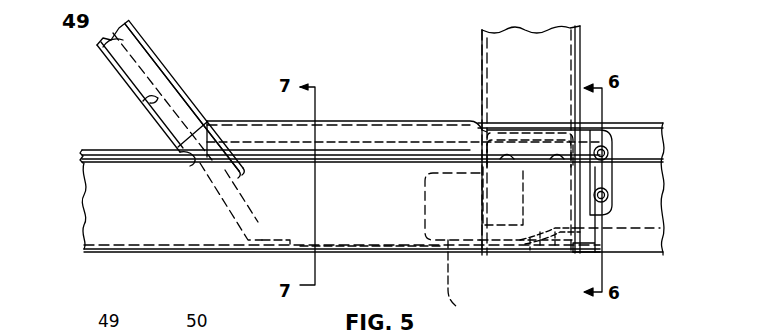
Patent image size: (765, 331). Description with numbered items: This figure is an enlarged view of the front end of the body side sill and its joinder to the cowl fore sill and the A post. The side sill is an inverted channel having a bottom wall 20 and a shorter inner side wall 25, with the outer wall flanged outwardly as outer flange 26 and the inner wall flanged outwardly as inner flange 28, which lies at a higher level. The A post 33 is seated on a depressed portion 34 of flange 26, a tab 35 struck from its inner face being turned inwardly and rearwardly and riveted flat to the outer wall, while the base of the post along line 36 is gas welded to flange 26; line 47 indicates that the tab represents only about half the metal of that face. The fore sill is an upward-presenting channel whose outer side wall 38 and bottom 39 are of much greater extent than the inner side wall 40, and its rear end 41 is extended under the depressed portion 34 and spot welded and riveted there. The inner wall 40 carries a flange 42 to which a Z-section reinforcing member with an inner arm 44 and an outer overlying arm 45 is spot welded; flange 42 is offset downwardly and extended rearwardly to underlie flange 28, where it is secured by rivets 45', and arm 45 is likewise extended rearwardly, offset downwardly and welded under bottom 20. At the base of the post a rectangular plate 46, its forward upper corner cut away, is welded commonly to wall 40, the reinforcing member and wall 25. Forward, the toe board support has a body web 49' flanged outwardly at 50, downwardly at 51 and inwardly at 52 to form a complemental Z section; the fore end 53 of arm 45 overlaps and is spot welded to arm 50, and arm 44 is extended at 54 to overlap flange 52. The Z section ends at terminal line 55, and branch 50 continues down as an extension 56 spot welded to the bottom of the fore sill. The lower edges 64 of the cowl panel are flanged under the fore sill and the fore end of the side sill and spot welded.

The bottom wall 20 is at (652, 120).
The inner side wall 25 is at (663, 146).
The outer flange 26 is at (665, 210).
The inner flange 28 is at (648, 150).
The A post 33 is at (583, 52).
The depressed portion 34 is at (548, 255).
The tab 35 is at (618, 147).
The weld line 36 is at (607, 222).
The outer side wall 38 is at (82, 154).
The bottom 39 is at (238, 255).
The inner side wall 40 is at (161, 223).
The rear end 41 is at (505, 257).
The flange 42 is at (407, 165).
The inner arm 44 is at (393, 157).
The outer overlying arm 45 is at (347, 109).
The rivets 45' is at (532, 181).
The rectangular plate 46 is at (462, 282).
The line 47 is at (512, 212).
The body web 49' is at (96, 58).
The outward flange 50 is at (157, 38).
The downward flange 51 is at (153, 72).
The inward flange 52 is at (123, 82).
The fore end of reinforcing member 53 is at (187, 97).
The forward extension of arm 44 54 is at (146, 99).
The terminal line 55 is at (191, 160).
The extension 56 is at (327, 241).
The lower edges 64 is at (393, 253).